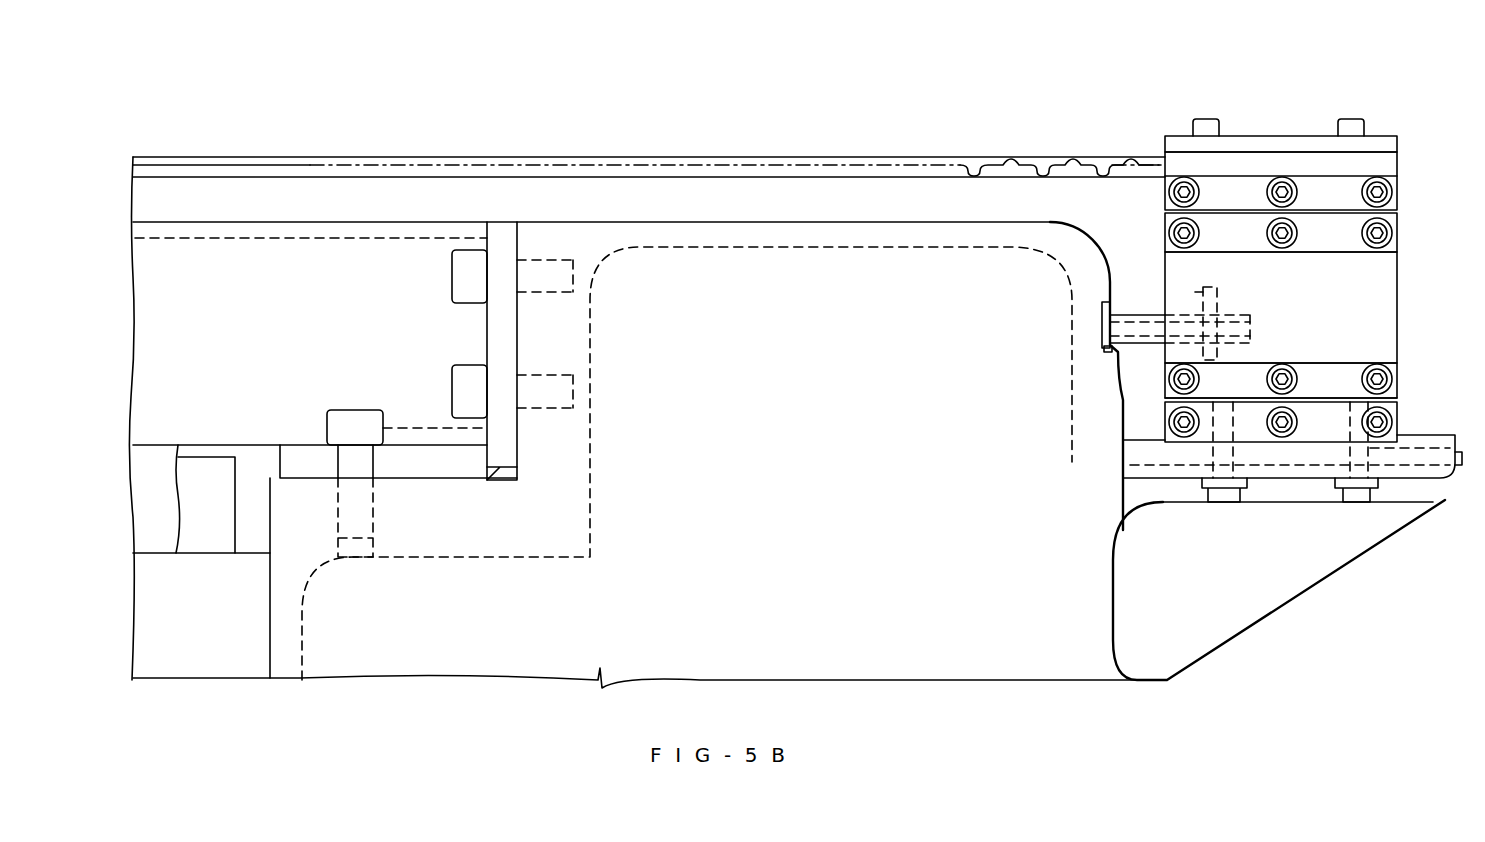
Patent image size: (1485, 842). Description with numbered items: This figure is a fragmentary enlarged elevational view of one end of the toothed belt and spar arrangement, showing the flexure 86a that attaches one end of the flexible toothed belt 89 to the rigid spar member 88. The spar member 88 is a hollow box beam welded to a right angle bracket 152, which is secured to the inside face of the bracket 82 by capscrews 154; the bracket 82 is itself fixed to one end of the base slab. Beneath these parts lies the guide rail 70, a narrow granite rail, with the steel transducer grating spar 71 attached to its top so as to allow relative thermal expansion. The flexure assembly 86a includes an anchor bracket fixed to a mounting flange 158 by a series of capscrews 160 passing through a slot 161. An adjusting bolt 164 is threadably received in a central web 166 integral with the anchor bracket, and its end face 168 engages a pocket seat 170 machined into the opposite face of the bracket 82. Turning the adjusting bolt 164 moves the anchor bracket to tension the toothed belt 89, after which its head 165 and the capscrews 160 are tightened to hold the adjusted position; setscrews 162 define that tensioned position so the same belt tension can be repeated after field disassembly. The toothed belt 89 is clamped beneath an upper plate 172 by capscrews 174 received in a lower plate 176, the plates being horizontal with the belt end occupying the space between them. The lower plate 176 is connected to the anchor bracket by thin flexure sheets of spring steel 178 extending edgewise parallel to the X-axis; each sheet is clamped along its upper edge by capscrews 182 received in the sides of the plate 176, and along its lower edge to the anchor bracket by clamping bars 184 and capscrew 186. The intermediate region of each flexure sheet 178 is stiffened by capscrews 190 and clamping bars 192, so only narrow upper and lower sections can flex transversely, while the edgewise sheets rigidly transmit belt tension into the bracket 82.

The guide rail 70 is at (196, 672).
The transducer grating spar 71 is at (172, 494).
The bracket 82 is at (733, 451).
The flexure 86a is at (1126, 92).
The rigid spar member 88 is at (435, 200).
The toothed belt 89 is at (670, 123).
The right angle bracket 152 is at (484, 331).
The capscrews 154 is at (450, 278).
The mounting flange 158 is at (1163, 480).
The capscrews 160 is at (1224, 503).
The slot 161 is at (1170, 454).
The setscrews 162 is at (1425, 465).
The adjusting bolt 164 is at (1256, 319).
The head 165 is at (1222, 290).
The central web 166 is at (1200, 290).
The end face 168 is at (1102, 312).
The pocket seat 170 is at (1106, 351).
The upper plate 172 is at (1244, 135).
The capscrews 174 is at (1200, 119).
The lower plate 176 is at (1162, 193).
The flexure sheets 178 is at (1281, 307).
The capscrews 182 is at (1178, 176).
The clamping bars 184 is at (1170, 424).
The capscrew 186 is at (1170, 417).
The capscrews 190 is at (1200, 383).
The clamping bars 192 is at (1398, 245).